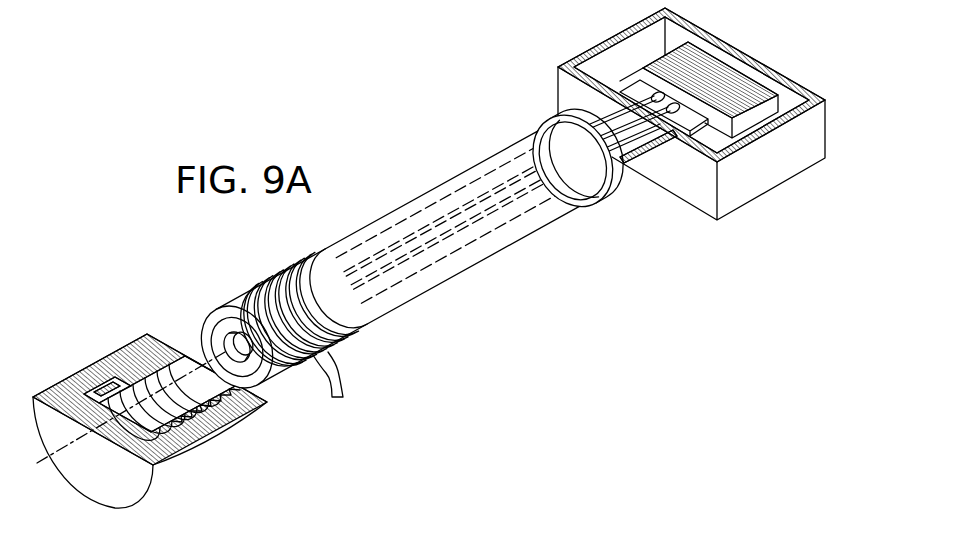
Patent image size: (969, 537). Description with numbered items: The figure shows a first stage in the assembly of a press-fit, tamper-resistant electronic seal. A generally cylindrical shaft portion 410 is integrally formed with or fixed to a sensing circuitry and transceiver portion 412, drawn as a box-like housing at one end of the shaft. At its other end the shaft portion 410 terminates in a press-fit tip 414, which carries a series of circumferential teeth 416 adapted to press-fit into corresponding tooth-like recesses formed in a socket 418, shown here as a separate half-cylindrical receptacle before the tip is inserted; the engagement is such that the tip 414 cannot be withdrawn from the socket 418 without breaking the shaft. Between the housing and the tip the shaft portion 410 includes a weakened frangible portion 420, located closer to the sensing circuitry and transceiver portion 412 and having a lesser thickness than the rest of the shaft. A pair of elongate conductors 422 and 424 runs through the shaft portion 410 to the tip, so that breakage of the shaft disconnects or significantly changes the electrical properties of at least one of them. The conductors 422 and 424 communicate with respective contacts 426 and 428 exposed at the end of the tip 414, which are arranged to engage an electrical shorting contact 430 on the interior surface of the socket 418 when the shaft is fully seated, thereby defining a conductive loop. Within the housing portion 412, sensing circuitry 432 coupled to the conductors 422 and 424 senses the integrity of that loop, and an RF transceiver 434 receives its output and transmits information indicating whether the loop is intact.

The shaft portion 410 is at (419, 190).
The sensing circuitry and transceiver portion 412 is at (764, 191).
The press-fit tip 414 is at (270, 332).
The circumferential teeth 416 is at (331, 397).
The socket 418 is at (150, 421).
The weakened frangible portion 420 is at (592, 190).
The elongate conductor 422 is at (592, 98).
The elongate conductor 424 is at (660, 140).
The contact 426 is at (222, 346).
The contact 428 is at (250, 366).
The electrical shorting contact 430 is at (133, 447).
The sensing circuitry 432 is at (640, 83).
The RF transceiver 434 is at (726, 66).